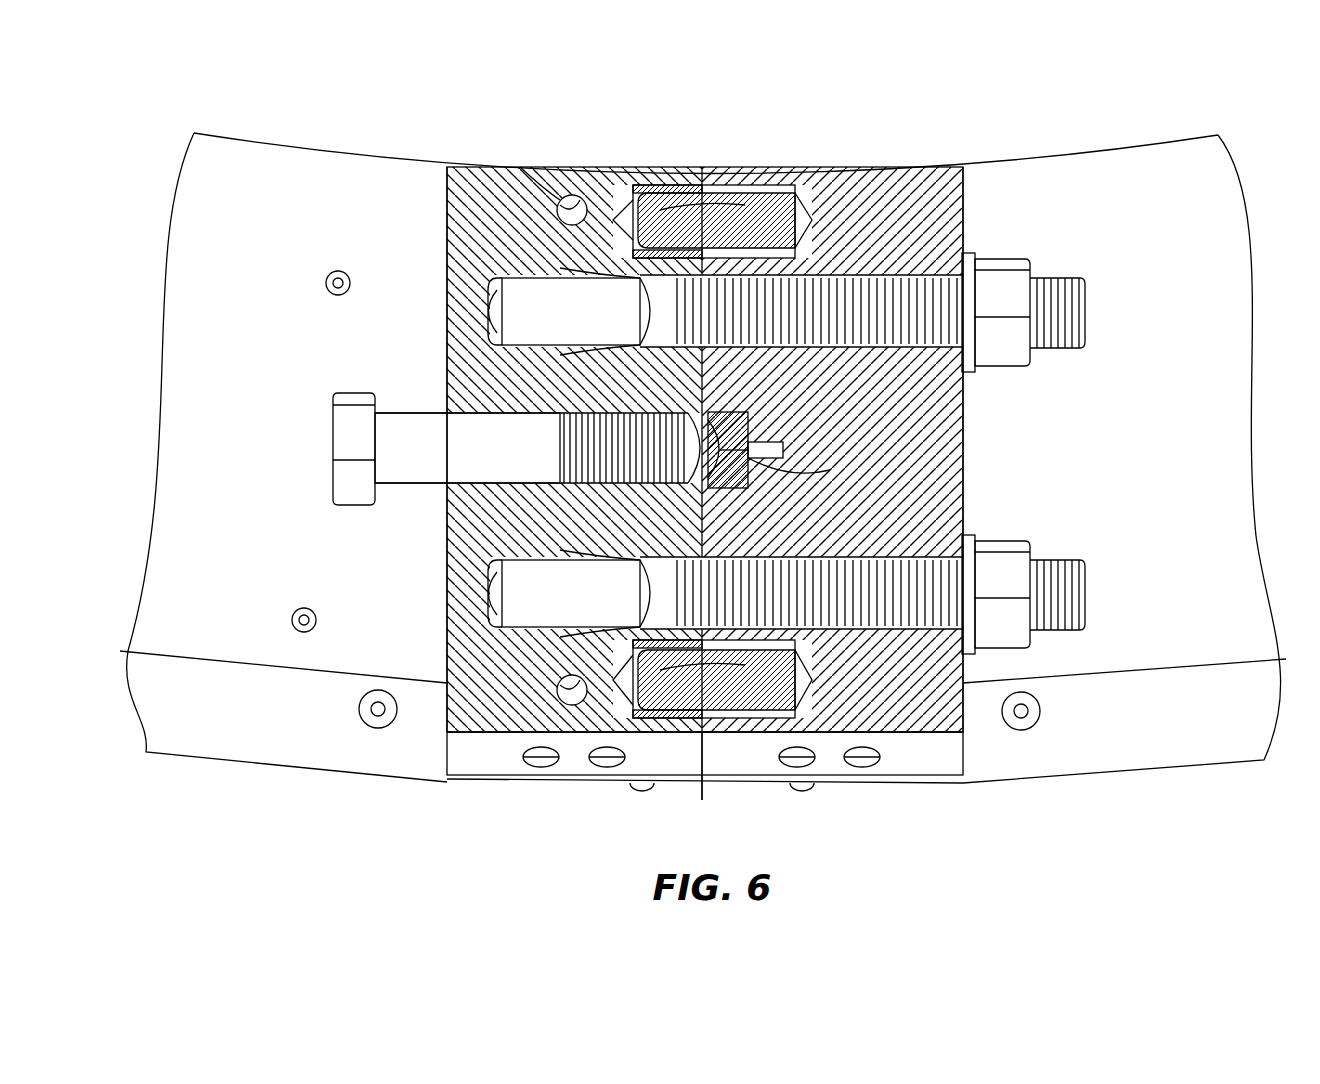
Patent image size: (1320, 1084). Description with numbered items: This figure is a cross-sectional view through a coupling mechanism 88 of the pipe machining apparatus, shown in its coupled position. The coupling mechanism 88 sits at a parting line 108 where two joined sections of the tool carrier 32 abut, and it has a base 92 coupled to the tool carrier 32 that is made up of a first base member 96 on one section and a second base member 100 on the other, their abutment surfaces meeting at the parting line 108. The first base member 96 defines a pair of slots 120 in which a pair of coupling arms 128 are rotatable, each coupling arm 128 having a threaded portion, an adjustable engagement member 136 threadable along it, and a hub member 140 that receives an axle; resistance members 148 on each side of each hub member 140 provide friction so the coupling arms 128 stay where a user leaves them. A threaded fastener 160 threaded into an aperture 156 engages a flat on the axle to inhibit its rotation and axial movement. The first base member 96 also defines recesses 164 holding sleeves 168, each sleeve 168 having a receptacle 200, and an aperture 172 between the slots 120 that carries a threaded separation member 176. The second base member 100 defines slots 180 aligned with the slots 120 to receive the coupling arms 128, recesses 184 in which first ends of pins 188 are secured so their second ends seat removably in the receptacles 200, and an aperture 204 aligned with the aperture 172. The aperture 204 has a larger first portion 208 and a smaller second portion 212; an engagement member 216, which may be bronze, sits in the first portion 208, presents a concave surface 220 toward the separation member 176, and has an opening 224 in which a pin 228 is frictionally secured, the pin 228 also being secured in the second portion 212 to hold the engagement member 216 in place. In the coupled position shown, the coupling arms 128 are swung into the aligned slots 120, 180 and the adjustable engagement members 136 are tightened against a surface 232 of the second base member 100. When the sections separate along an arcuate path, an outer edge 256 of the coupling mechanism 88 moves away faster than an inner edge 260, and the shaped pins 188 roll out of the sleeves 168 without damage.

The tool carrier 32 is at (1180, 728).
The coupling mechanism 88 is at (436, 182).
The base 92 is at (575, 746).
The first base member 96 is at (465, 705).
The second base member 100 is at (1030, 712).
The parting line 108 is at (808, 768).
The slots 120 is at (495, 295).
The coupling arms 128 is at (907, 350).
The adjustable engagement member 136 is at (1005, 265).
The hub member 140 is at (535, 318).
The resistance members 148 is at (560, 268).
The aperture 156 is at (568, 197).
The threaded fastener 160 is at (557, 195).
The recesses 164 is at (446, 228).
The sleeves 168 is at (712, 193).
The aperture 172 is at (445, 485).
The separation member 176 is at (345, 435).
The slots 180 is at (900, 300).
The recesses 184 is at (777, 203).
The pins 188 is at (752, 207).
The receptacles 200 is at (622, 205).
The aperture 204 is at (652, 628).
The first portion 208 is at (745, 415).
The second portion 212 is at (770, 450).
The engagement member 216 is at (745, 472).
The concave surface 220 is at (560, 449).
The opening 224 is at (725, 428).
The pin 228 is at (695, 430).
The surface 232 is at (965, 190).
The outer edge 256 is at (705, 800).
The inner edge 260 is at (660, 166).